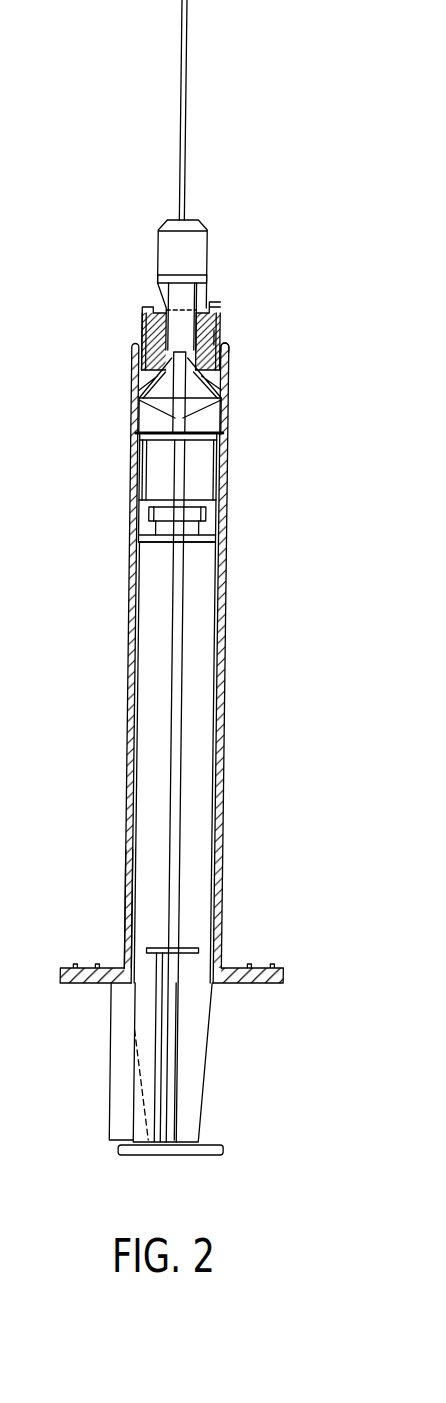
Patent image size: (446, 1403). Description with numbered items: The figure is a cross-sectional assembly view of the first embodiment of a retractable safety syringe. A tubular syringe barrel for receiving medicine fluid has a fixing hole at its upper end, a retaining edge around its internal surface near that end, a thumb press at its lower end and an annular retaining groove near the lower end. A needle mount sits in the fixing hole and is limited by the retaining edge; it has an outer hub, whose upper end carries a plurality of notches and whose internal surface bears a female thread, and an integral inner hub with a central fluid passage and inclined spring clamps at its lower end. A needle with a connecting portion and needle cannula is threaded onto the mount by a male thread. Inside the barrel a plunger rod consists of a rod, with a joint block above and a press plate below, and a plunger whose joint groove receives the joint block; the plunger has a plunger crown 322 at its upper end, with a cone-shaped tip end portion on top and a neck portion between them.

The plunger crown 322 is at (225, 433).